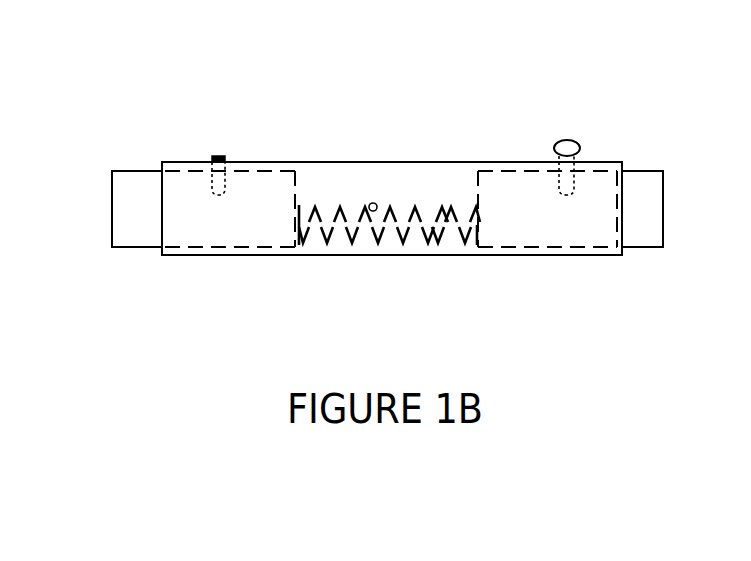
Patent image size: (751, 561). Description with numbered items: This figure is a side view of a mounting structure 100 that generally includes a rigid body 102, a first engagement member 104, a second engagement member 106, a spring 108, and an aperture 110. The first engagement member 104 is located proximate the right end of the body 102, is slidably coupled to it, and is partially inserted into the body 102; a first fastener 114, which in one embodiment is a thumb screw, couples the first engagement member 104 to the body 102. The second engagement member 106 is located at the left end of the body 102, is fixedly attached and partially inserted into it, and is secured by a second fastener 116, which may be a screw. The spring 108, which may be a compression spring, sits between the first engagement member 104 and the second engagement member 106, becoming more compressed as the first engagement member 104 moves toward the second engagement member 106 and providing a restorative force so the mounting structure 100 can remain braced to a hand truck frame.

The mounting structure 100 is at (351, 143).
The body 102 is at (392, 196).
The first engagement member 104 is at (670, 196).
The second engagement member 106 is at (107, 197).
The spring 108 is at (389, 252).
The aperture 110 is at (411, 195).
The first fastener 114 is at (534, 144).
The second fastener 116 is at (184, 151).